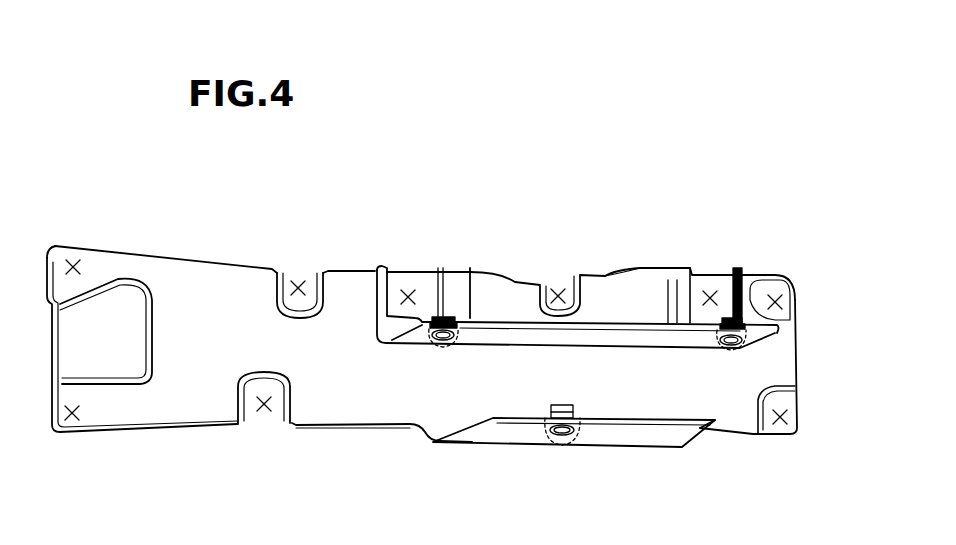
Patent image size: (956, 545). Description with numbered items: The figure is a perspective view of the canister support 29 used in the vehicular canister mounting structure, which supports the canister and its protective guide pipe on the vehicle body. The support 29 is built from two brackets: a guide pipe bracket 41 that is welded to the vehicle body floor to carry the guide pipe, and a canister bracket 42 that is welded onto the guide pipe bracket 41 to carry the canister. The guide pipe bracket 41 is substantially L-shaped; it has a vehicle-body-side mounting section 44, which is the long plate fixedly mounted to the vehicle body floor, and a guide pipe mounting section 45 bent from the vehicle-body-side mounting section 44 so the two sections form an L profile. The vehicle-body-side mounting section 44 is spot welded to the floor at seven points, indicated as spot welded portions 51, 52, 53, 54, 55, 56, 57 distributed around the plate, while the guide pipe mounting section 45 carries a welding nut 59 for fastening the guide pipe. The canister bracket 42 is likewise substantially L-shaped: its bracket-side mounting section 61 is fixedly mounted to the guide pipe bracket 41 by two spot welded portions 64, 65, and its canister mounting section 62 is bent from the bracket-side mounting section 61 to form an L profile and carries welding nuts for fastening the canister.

The canister support 29 is at (566, 207).
The guide pipe bracket 41 is at (354, 268).
The canister bracket 42 is at (497, 283).
The vehicle-body-side mounting section 44 is at (362, 402).
The guide pipe mounting section 45 is at (488, 440).
The spot welded portion 51 is at (73, 266).
The spot welded portion 52 is at (298, 286).
The spot welded portion 53 is at (558, 296).
The spot welded portion 54 is at (777, 298).
The spot welded portion 55 is at (72, 413).
The spot welded portion 56 is at (264, 404).
The spot welded portion 57 is at (780, 417).
The welding nut 59 is at (564, 405).
The bracket-side mounting section 61 is at (633, 282).
The canister mounting section 62 is at (655, 300).
The spot welded portion 64 is at (408, 297).
The spot welded portion 65 is at (709, 297).